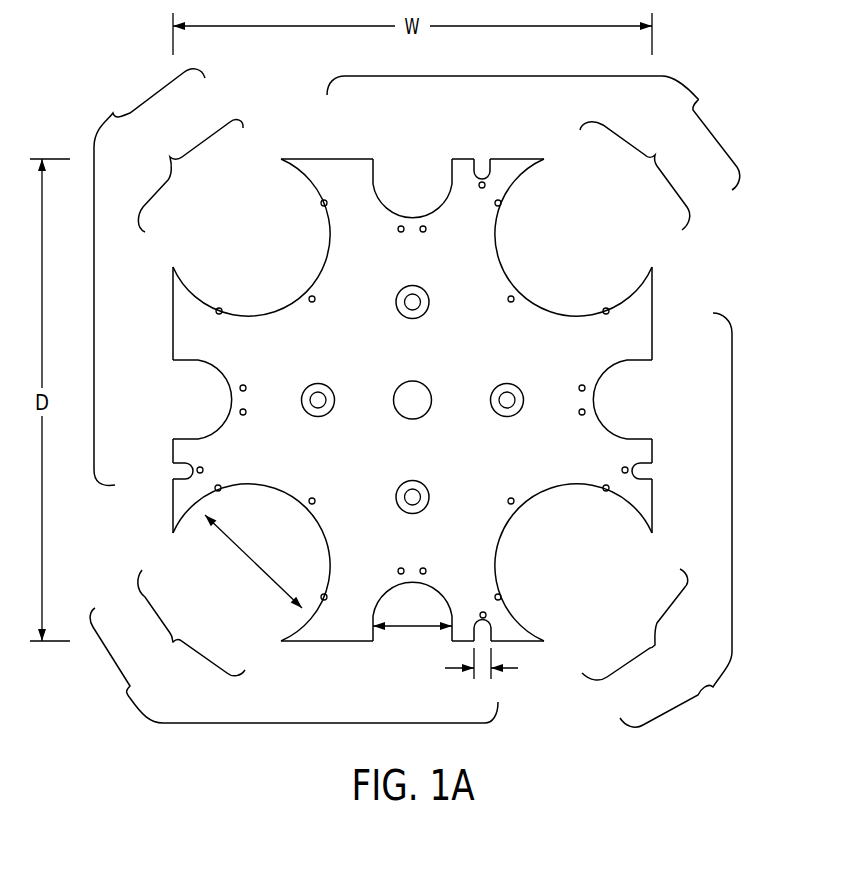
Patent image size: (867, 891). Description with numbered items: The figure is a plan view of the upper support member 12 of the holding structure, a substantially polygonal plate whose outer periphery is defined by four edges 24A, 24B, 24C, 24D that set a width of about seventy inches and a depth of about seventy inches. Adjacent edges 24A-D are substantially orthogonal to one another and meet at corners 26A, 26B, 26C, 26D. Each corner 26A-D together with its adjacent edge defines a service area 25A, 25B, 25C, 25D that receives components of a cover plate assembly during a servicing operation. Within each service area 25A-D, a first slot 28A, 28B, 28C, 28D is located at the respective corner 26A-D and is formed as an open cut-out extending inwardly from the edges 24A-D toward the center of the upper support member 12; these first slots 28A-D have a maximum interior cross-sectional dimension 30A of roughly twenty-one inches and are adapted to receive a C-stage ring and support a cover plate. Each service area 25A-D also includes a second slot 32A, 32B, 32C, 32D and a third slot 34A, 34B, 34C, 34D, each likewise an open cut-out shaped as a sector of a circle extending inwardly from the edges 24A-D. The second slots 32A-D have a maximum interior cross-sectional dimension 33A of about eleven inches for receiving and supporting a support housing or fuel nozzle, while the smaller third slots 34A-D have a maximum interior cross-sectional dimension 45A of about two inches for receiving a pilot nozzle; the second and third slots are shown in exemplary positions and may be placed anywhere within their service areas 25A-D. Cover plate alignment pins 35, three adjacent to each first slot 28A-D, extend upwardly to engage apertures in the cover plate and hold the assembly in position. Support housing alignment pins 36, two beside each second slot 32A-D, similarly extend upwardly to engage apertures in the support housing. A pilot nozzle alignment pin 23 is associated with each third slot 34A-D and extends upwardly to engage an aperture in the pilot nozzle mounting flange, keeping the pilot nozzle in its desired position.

The upper support member 12 is at (288, 125).
The pilot nozzle alignment pin 23 is at (480, 188).
The edge 24A is at (332, 643).
The edge 24B is at (653, 306).
The edge 24C is at (340, 158).
The edge 24D is at (172, 318).
The service area 25A is at (294, 670).
The service area 25B is at (676, 520).
The service area 25C is at (533, 129).
The service area 25D is at (149, 277).
The corner 26A is at (191, 623).
The corner 26B is at (635, 624).
The corner 26C is at (635, 176).
The corner 26D is at (190, 176).
The first slot 28A is at (280, 488).
The first slot 28B is at (545, 488).
The first slot 28C is at (560, 313).
The first slot 28D is at (265, 313).
The maximum interior cross-sectional dimension 30A is at (246, 557).
The second slot 32A is at (442, 588).
The second slot 32B is at (604, 432).
The second slot 32C is at (386, 217).
The second slot 32D is at (220, 372).
The maximum interior cross-sectional dimension 33A is at (410, 628).
The third slot 34A is at (492, 641).
The third slot 34B is at (655, 473).
The third slot 34C is at (478, 166).
The third slot 34D is at (192, 467).
The cover plate alignment pin 35 is at (315, 301).
The support housing alignment pin 36 is at (423, 233).
The maximum interior cross-sectional dimension 45A is at (508, 668).